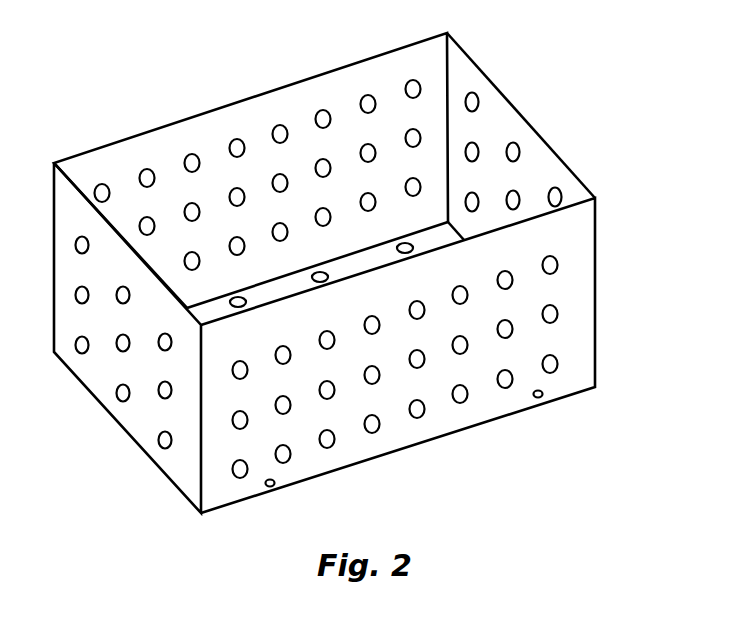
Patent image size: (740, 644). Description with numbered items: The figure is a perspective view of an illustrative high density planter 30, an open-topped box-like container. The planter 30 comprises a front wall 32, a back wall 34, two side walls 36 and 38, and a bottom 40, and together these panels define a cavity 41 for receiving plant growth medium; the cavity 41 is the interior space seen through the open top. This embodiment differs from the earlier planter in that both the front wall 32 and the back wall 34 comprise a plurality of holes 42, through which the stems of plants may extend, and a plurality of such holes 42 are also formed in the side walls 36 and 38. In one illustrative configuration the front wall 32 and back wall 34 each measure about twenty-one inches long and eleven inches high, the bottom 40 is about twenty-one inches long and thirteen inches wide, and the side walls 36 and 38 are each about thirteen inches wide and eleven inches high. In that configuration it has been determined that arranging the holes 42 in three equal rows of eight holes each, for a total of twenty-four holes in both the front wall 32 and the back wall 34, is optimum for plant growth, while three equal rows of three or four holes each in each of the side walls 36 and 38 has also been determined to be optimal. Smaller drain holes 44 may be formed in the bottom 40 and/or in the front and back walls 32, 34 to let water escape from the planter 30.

The planter 30 is at (97, 96).
The front wall 32 is at (557, 288).
The back wall 34 is at (285, 100).
The side wall 36 is at (158, 453).
The side wall 38 is at (458, 75).
The bottom 40 is at (252, 295).
The cavity 41 is at (203, 182).
The holes 42 is at (328, 440).
The drain holes 44 is at (405, 245).